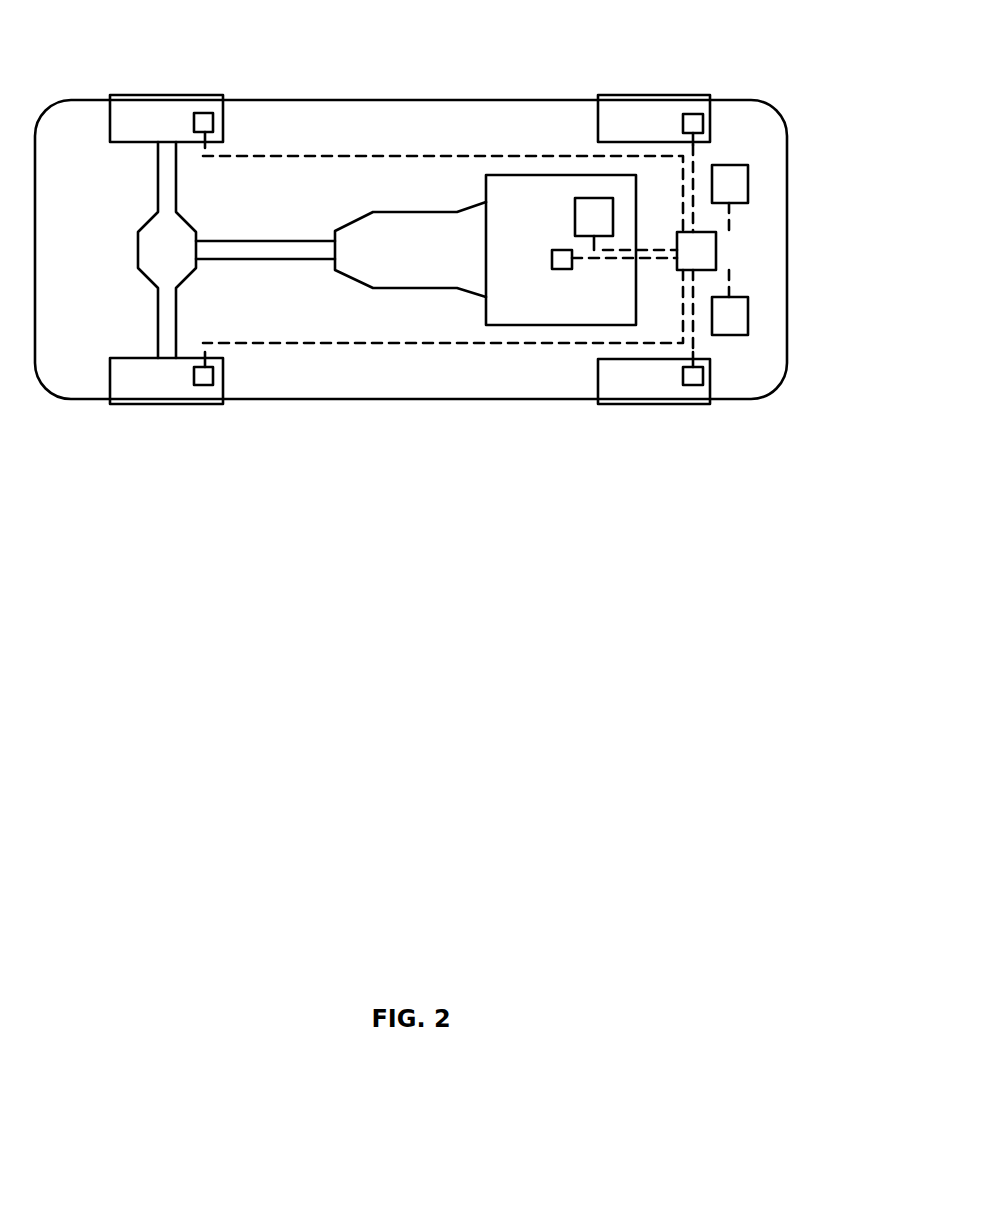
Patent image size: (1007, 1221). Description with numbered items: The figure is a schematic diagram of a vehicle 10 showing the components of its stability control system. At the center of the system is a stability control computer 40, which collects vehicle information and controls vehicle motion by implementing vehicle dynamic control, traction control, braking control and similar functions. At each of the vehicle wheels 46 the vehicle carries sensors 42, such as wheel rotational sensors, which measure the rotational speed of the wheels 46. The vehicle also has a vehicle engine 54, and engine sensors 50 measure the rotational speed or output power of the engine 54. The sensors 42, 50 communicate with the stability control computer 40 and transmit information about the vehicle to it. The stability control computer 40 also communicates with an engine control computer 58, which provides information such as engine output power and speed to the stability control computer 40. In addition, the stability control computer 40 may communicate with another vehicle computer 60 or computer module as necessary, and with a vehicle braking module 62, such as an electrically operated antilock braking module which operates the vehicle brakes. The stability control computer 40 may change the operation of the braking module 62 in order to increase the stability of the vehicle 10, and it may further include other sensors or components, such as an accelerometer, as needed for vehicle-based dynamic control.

The vehicle 10 is at (317, 382).
The vehicle wheels 46 is at (138, 113).
The sensors 42 is at (203, 123).
The vehicle engine 54 is at (533, 217).
The engine control computer 58 is at (598, 213).
The engine sensors 50 is at (560, 264).
The stability control computer 40 is at (710, 259).
The vehicle braking module 62 is at (738, 193).
The vehicle computer 60 is at (738, 325).